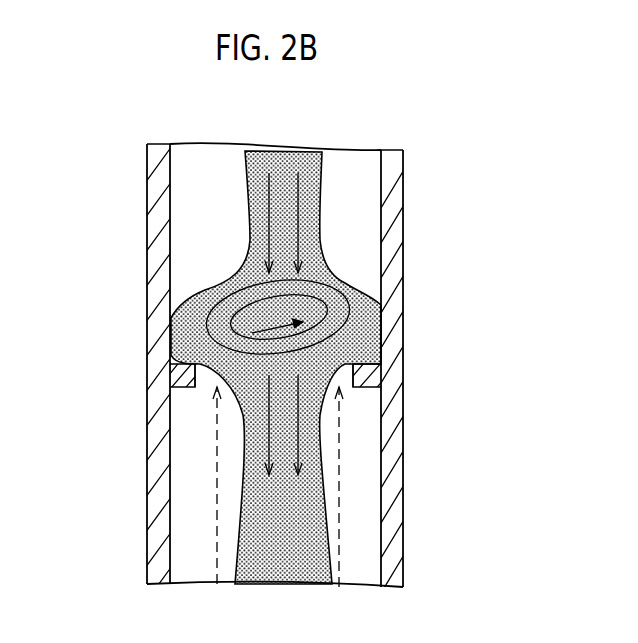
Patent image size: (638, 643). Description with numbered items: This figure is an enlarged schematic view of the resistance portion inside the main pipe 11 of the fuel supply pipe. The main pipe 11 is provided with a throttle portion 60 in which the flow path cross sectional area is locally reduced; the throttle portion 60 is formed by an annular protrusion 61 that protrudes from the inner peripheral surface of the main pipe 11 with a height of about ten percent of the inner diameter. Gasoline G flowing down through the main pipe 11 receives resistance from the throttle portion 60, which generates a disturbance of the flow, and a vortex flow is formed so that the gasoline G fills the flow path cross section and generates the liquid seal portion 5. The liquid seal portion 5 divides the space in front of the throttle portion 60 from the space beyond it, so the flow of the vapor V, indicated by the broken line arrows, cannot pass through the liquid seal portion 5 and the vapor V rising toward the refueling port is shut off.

The main pipe 11 is at (145, 253).
The gasoline G is at (310, 200).
The liquid seal portion 5 is at (348, 298).
The throttle portion 60 is at (384, 373).
The annular protrusion 61 is at (202, 378).
The vapor V is at (217, 497).